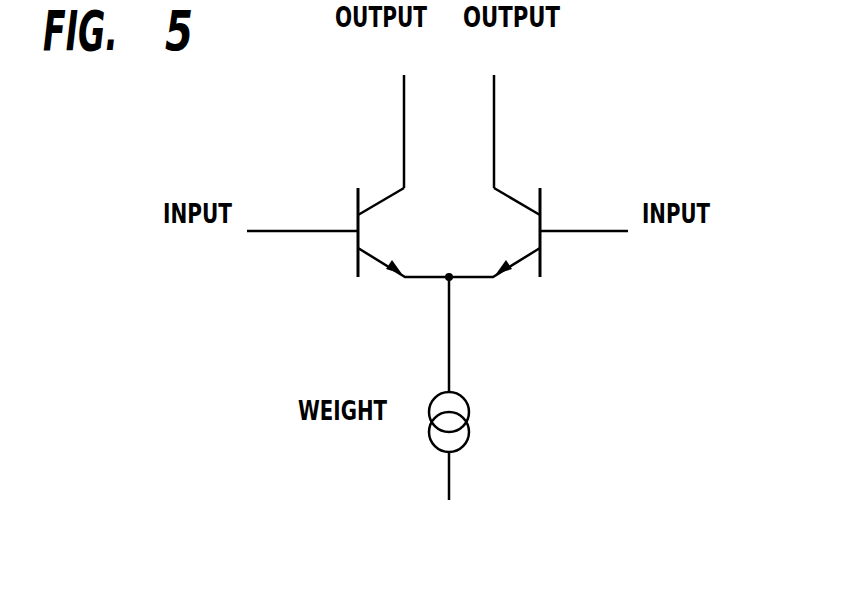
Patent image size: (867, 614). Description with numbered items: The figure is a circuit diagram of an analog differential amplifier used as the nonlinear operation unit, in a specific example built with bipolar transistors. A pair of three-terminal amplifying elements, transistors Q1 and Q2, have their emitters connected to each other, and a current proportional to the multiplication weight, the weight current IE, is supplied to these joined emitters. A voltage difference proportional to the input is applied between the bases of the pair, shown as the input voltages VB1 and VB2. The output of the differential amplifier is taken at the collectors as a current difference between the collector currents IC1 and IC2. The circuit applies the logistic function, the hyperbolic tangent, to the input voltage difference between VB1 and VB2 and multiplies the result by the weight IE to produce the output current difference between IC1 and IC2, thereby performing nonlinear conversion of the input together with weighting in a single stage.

The bipolar transistor Q1 is at (403, 232).
The bipolar transistor Q2 is at (494, 232).
The collector current IC1 is at (408, 116).
The collector current IC2 is at (496, 116).
The input voltage VB1 is at (278, 247).
The input voltage VB2 is at (615, 247).
The weight current IE is at (408, 385).